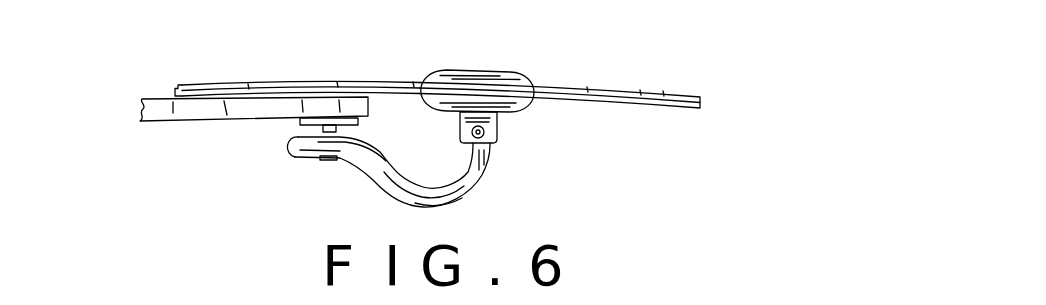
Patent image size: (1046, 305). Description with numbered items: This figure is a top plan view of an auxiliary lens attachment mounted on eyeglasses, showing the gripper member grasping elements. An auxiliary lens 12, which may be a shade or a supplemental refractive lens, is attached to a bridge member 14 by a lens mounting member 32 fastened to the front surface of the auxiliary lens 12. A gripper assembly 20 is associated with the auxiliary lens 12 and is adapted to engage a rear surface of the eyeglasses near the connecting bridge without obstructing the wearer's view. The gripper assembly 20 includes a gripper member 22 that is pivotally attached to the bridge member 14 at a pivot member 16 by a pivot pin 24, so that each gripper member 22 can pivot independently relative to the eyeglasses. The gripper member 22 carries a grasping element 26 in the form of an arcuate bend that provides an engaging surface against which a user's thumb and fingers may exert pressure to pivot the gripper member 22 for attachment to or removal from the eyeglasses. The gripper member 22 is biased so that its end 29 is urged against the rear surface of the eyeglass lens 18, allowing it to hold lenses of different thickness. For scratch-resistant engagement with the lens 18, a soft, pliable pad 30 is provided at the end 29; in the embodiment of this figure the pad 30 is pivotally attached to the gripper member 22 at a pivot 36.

The auxiliary lens 12 is at (197, 86).
The bridge member 14 is at (527, 105).
The pivot member 16 is at (483, 120).
The lens of eyeglasses 18 is at (140, 112).
The gripper assembly 20 is at (430, 175).
The gripper member 22 is at (377, 152).
The pivot pin 24 is at (485, 138).
The grasping element 26 is at (447, 198).
The end of gripper member 29 is at (293, 152).
The pad 30 is at (297, 123).
The lens mounting member 32 is at (472, 73).
The pivot 36 is at (360, 130).